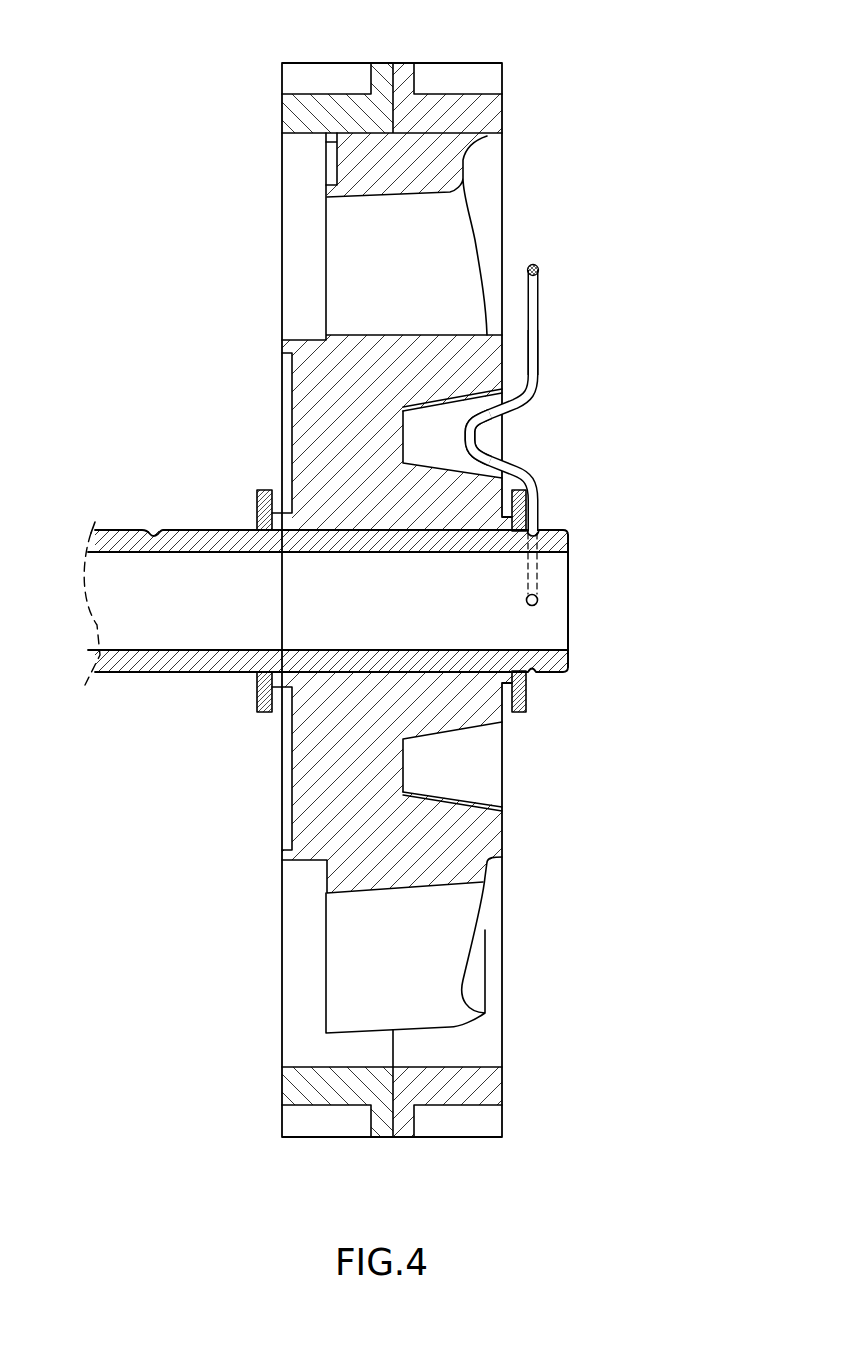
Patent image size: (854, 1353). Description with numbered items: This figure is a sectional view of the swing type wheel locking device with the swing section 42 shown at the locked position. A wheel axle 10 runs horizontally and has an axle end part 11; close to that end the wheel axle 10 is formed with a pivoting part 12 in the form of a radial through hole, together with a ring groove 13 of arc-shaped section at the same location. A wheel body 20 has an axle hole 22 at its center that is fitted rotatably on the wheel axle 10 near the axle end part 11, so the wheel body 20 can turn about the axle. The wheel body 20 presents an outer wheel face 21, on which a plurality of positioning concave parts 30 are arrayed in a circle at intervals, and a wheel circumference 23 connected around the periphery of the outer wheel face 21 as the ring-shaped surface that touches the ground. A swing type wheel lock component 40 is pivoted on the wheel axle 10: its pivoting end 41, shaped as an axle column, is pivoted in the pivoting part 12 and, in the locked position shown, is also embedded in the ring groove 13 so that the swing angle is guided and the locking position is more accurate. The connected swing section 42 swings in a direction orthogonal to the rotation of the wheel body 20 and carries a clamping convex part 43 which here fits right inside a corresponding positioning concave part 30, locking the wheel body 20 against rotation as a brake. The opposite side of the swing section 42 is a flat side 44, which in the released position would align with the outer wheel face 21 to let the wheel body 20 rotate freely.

The wheel axle 10 is at (213, 522).
The axle end part 11 is at (570, 627).
The pivoting part 12 is at (536, 592).
The ring groove 13 is at (540, 521).
The wheel body 20 is at (263, 220).
The outer wheel face 21 is at (503, 827).
The axle hole 22 is at (357, 552).
The wheel circumference 23 is at (470, 62).
The positioning concave part 30 is at (412, 441).
The swing type wheel lock component 40 is at (528, 427).
The pivoting end 41 is at (540, 600).
The swing section 42 is at (557, 268).
The clamping convex part 43 is at (462, 437).
The flat side 44 is at (517, 353).